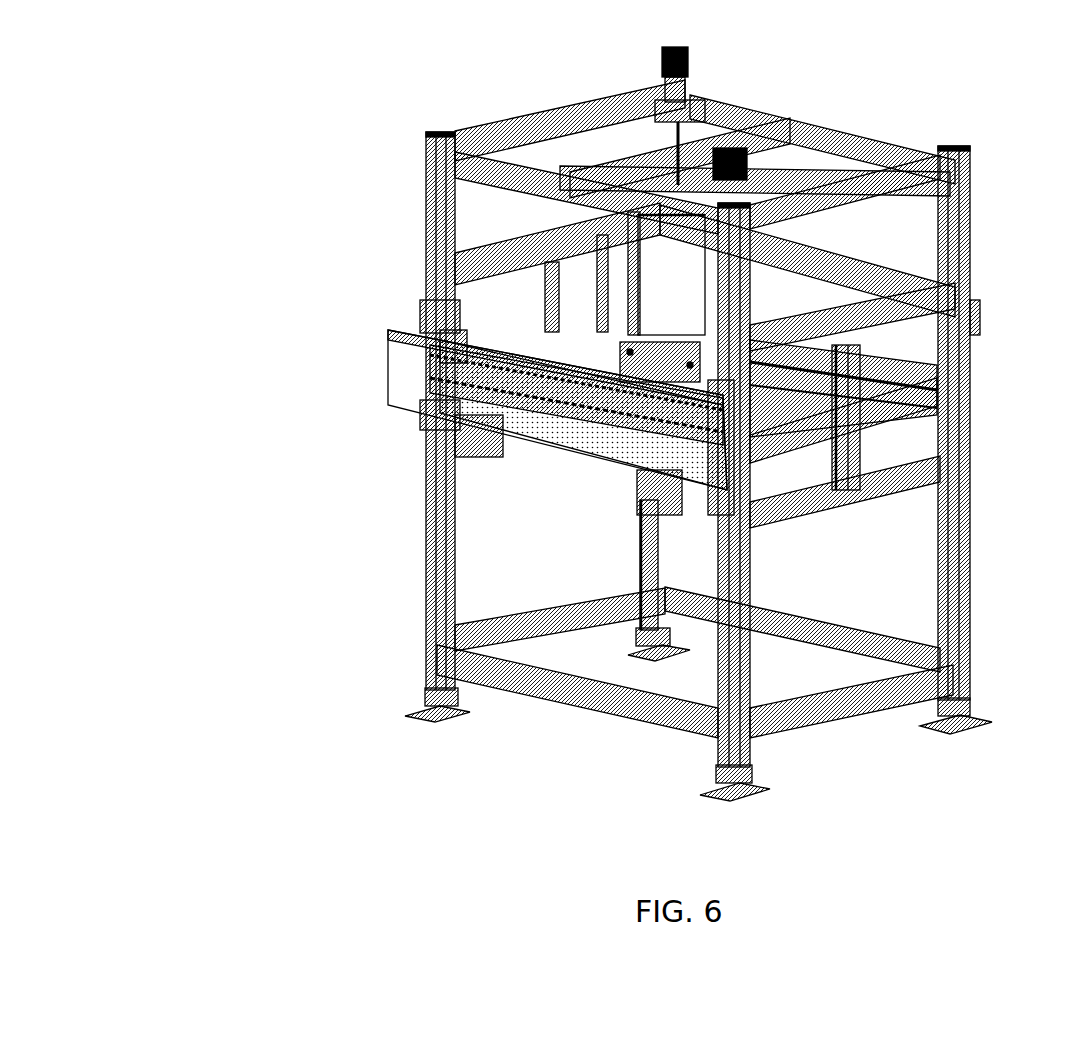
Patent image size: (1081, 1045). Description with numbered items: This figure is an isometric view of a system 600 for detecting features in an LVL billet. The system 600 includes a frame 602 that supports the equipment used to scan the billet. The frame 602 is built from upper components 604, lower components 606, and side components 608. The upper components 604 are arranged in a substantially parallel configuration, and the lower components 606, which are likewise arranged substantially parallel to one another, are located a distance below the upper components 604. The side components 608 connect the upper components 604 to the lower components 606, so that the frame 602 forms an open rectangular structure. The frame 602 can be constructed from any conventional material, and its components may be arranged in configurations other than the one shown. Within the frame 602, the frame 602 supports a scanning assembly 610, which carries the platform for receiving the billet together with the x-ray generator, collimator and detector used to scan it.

The system 600 is at (295, 88).
The frame 602 is at (850, 125).
The upper components 604 is at (585, 95).
The lower components 606 is at (650, 715).
The side components 608 is at (985, 510).
The scanning assembly 610 is at (685, 300).